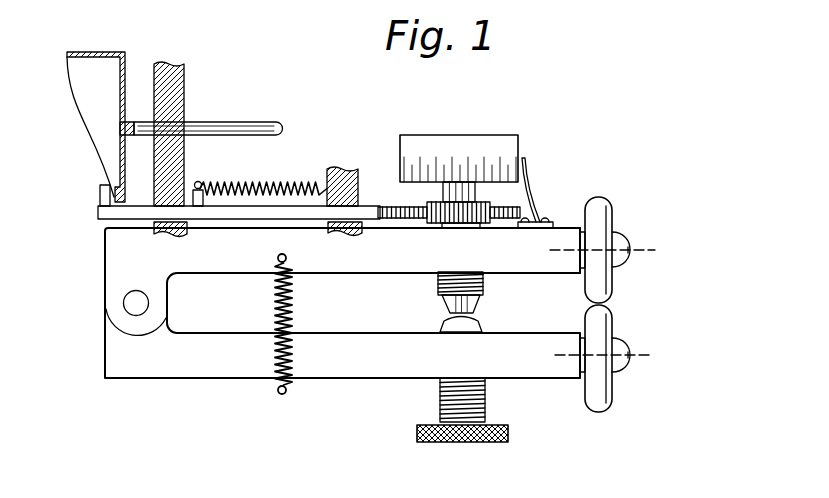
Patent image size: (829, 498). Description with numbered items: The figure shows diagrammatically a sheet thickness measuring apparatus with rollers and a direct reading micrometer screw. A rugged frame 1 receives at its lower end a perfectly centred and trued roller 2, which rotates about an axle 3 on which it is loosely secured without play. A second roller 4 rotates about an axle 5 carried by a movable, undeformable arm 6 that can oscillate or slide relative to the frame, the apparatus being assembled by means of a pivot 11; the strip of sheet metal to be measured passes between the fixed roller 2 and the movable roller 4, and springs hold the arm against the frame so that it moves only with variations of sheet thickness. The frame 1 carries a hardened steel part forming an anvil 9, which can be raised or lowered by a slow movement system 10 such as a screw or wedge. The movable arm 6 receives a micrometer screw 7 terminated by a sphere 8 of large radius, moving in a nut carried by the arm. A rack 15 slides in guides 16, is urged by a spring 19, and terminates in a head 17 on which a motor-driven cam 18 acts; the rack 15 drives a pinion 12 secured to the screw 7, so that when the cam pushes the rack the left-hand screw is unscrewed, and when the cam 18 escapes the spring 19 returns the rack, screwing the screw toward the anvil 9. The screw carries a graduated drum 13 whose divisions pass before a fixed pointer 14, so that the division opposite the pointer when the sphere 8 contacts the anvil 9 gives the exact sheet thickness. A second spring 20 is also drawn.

The frame 1 is at (373, 365).
The roller 2 is at (593, 388).
The axle 3 is at (637, 355).
The second roller 4 is at (593, 282).
The axle 5 is at (635, 246).
The movable arm 6 is at (383, 260).
The micrometer screw 7 is at (483, 287).
The sphere 8 is at (477, 310).
The anvil 9 is at (448, 318).
The slow movement system 10 is at (482, 410).
The pivot 11 is at (133, 313).
The pinion 12 is at (490, 203).
The graduated drum 13 is at (513, 142).
The fixed pointer 14 is at (538, 213).
The rack 15 is at (287, 210).
The guides 16 is at (180, 103).
The head 17 is at (107, 199).
The cam 18 is at (95, 72).
The spring 19 is at (252, 182).
The return spring 20 is at (290, 317).